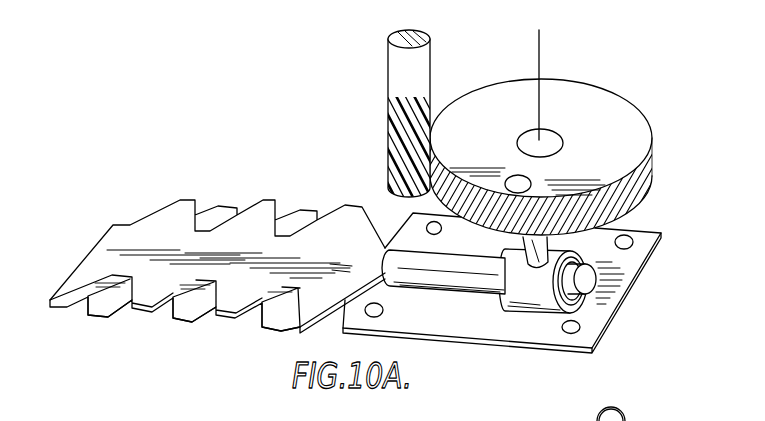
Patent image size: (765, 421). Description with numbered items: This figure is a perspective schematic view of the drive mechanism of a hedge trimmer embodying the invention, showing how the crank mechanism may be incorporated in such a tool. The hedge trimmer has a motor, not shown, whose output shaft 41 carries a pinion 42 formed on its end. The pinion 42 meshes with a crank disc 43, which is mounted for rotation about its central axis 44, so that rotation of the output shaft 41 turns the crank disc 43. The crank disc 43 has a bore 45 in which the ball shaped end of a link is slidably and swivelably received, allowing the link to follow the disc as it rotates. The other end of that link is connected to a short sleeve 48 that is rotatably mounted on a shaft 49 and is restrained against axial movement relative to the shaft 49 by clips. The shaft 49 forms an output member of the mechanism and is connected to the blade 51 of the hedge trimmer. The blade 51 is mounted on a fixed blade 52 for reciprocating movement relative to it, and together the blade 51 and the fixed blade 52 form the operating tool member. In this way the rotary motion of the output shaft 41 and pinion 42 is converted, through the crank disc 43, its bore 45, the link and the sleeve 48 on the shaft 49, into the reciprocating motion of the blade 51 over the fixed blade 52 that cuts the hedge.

The output shaft 41 is at (390, 42).
The pinion 42 is at (402, 145).
The crank disc 43 is at (538, 140).
The central axis 44 is at (572, 72).
The bore 45 is at (532, 184).
The short sleeve 48 is at (527, 307).
The shaft 49 is at (408, 276).
The blade 51 is at (180, 208).
The fixed blade 52 is at (100, 300).